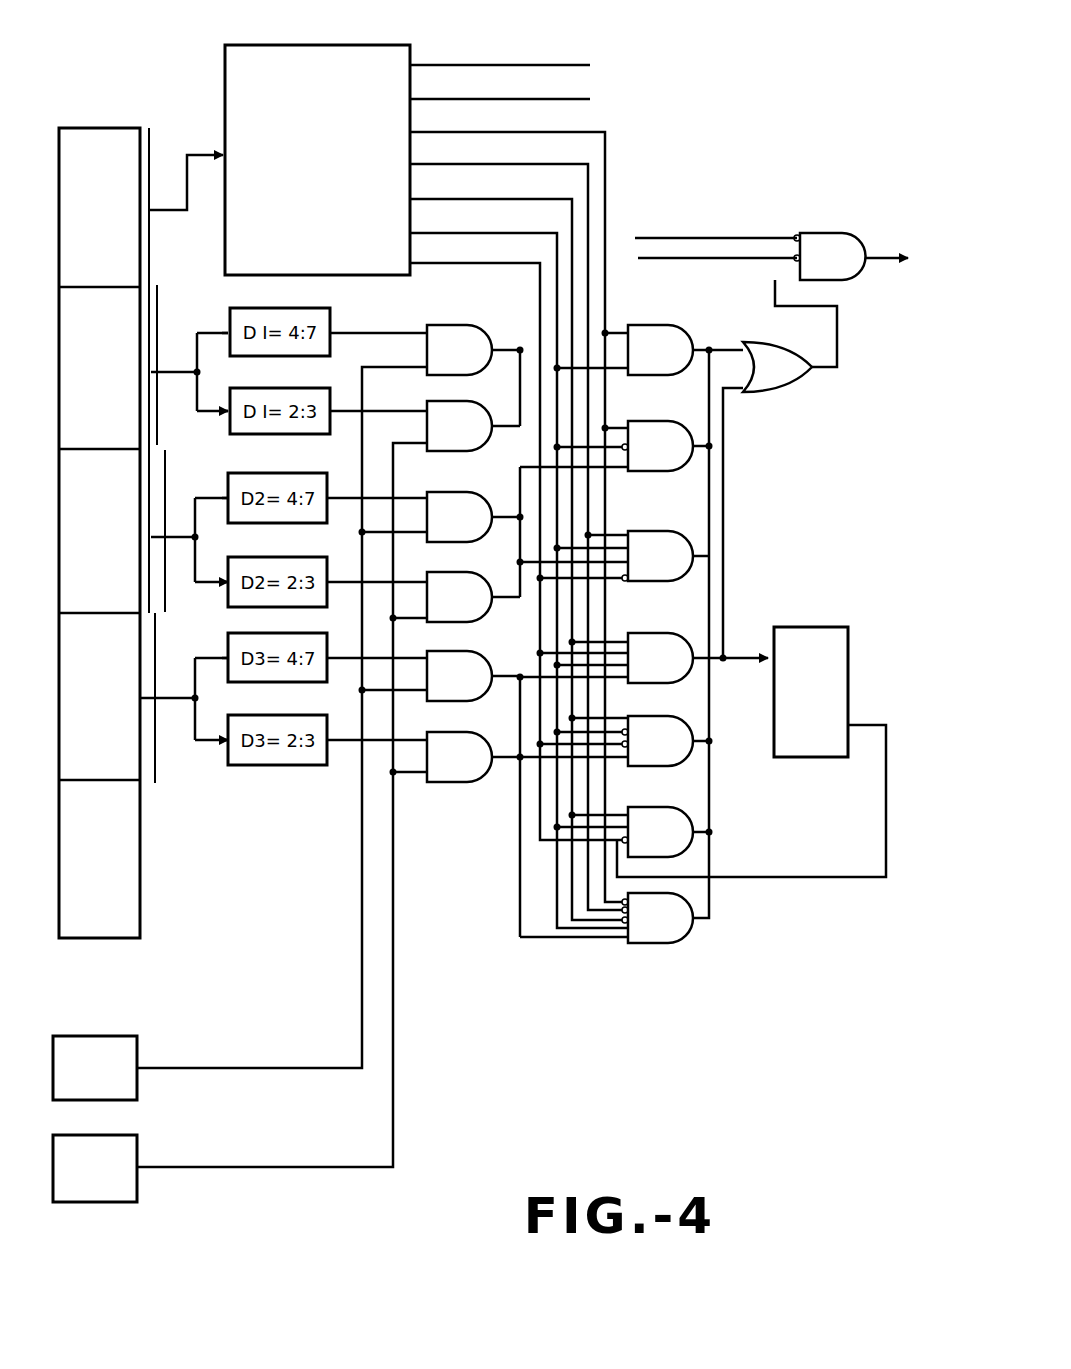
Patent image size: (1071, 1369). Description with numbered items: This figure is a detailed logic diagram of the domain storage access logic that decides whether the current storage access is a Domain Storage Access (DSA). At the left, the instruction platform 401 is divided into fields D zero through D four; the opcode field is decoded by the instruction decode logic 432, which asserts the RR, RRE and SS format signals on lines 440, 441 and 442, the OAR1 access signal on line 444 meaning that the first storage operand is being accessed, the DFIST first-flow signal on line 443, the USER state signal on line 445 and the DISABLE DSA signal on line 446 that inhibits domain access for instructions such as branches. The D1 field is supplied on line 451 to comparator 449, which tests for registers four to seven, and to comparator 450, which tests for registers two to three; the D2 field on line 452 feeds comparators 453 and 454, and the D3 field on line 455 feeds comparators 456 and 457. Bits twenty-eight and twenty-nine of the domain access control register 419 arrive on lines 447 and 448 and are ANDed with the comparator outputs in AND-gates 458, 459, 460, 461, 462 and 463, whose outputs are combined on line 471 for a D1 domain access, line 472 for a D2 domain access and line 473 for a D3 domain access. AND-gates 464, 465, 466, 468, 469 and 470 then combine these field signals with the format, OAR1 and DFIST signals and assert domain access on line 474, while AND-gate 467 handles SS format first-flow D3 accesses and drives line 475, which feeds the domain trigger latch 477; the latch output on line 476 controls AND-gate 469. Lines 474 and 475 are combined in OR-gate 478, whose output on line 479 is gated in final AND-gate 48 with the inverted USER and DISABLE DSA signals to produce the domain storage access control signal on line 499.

The instruction platform 401 is at (140, 875).
The instruction decode logic 432 is at (235, 52).
The USER line 445 is at (590, 65).
The DISABLE DSA line 446 is at (590, 99).
The RR format line 440 is at (605, 132).
The RRE format line 441 is at (590, 175).
The SS format line 442 is at (574, 210).
The DFIST line 443 is at (540, 277).
The OAR1 access line 444 is at (557, 306).
The domain access control register 419 is at (152, 1038).
The bit 28 line 447 is at (260, 1064).
The bit 29 line 448 is at (268, 1164).
The D1 range 4 to 7 comparator 449 is at (282, 358).
The D1 range 2 to 3 comparator 450 is at (280, 436).
The D1 field line 451 is at (183, 358).
The D2 field line 452 is at (183, 536).
The D2 range 4 to 7 comparator 453 is at (305, 525).
The D2 range 2 to 3 comparator 454 is at (264, 609).
The D3 field line 455 is at (173, 704).
The D3 range 4 to 7 comparator 456 is at (300, 684).
The D3 range 2 to 3 comparator 457 is at (312, 767).
The AND-gate 458 is at (473, 350).
The AND-gate 459 is at (473, 426).
The AND-gate 460 is at (473, 517).
The AND-gate 461 is at (473, 597).
The AND-gate 462 is at (473, 676).
The AND-gate 463 is at (473, 757).
The AND-gate 464 is at (660, 350).
The AND-gate 465 is at (668, 446).
The AND-gate 466 is at (668, 556).
The AND-gate 467 is at (698, 658).
The AND-gate 468 is at (668, 741).
The AND-gate 469 is at (668, 832).
The AND-gate 470 is at (668, 646).
The D1 field domain access line 471 is at (518, 370).
The D2 field domain access line 472 is at (518, 545).
The D3 field domain access line 473 is at (520, 692).
The domain access signal line 474 is at (712, 345).
The AND-gate 467 output line 475 is at (726, 546).
The domain trigger signal line 476 is at (812, 878).
The domain trigger latch 477 is at (797, 757).
The OR-gate 478 is at (777, 367).
The OR-gate output line 479 is at (839, 332).
The AND gate 48 is at (832, 256).
The domain storage access control signal line 499 is at (880, 264).